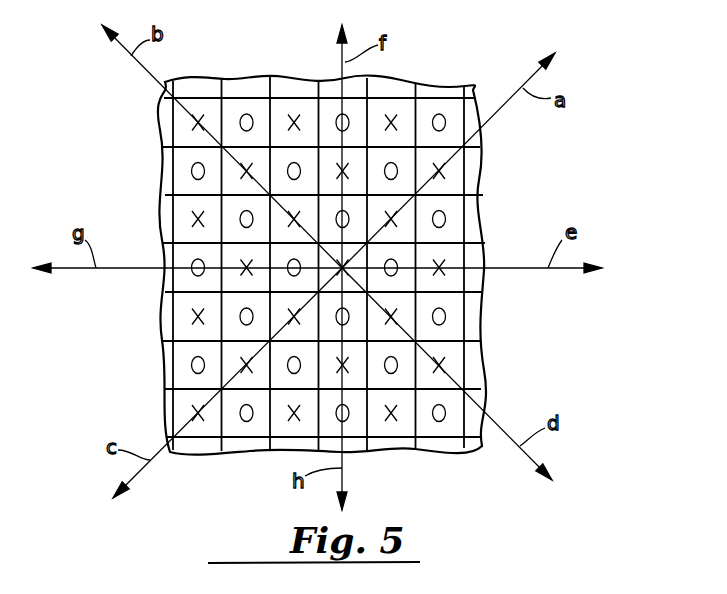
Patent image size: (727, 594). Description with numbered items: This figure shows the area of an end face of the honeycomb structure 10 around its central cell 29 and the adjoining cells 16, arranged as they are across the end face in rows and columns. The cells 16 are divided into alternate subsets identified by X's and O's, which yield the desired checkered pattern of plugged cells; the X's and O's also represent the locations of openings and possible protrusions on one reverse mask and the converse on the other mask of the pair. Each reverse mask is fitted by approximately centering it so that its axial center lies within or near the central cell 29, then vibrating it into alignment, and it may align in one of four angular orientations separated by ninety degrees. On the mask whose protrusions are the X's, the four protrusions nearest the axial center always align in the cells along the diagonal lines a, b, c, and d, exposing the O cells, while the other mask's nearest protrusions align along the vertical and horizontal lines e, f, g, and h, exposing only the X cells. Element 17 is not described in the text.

The honeycomb structure 10 is at (483, 196).
The cells 16 is at (407, 110).
The indicia of second type 17 is at (200, 93).
The central cell 29 is at (353, 273).